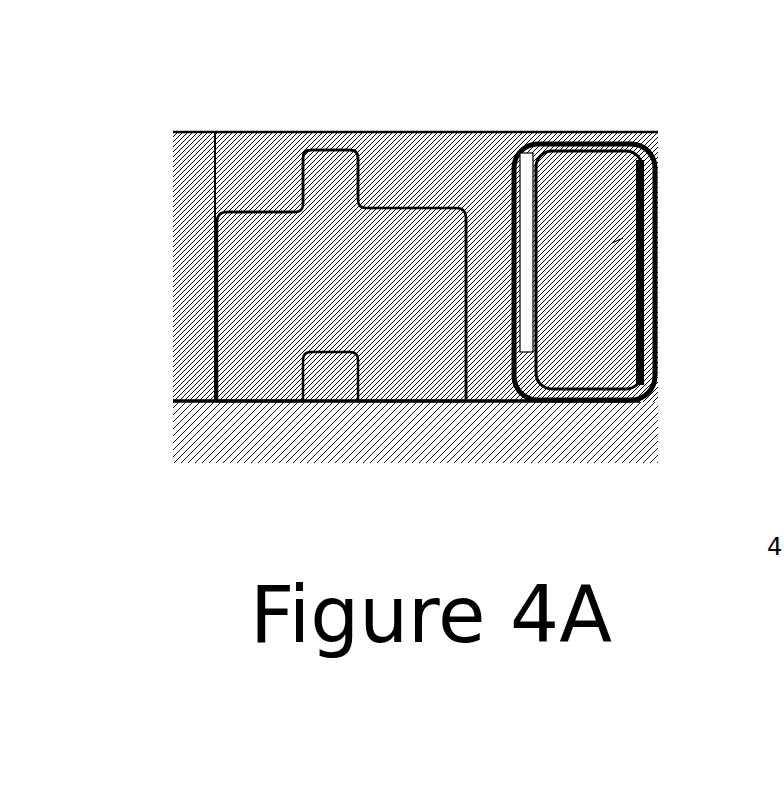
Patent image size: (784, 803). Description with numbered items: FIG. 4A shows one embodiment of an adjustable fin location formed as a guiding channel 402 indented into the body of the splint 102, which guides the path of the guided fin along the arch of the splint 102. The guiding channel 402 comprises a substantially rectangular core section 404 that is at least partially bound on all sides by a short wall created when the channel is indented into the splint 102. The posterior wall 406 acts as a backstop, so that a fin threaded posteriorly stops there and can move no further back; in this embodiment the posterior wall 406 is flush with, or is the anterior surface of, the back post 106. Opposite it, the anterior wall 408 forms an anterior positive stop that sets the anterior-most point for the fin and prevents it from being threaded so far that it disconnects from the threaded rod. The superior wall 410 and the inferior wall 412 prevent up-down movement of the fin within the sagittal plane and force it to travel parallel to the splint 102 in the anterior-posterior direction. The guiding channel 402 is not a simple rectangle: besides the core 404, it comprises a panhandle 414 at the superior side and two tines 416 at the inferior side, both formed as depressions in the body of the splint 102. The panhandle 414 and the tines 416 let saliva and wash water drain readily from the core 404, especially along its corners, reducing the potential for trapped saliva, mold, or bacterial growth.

The splint 102 is at (465, 159).
The back post 106 is at (657, 221).
The guiding channel 402 is at (362, 264).
The core section 404 is at (272, 270).
The posterior wall 406 is at (466, 366).
The anterior wall 408 is at (214, 344).
The superior wall 410 is at (242, 208).
The inferior wall 412 is at (327, 345).
The panhandle 414 is at (327, 160).
The tine 416 is at (257, 385).